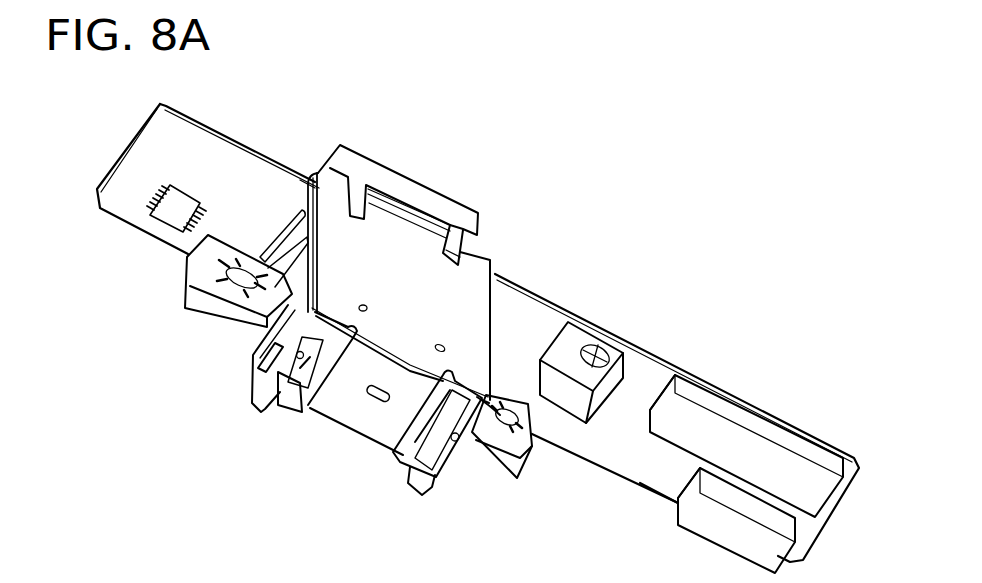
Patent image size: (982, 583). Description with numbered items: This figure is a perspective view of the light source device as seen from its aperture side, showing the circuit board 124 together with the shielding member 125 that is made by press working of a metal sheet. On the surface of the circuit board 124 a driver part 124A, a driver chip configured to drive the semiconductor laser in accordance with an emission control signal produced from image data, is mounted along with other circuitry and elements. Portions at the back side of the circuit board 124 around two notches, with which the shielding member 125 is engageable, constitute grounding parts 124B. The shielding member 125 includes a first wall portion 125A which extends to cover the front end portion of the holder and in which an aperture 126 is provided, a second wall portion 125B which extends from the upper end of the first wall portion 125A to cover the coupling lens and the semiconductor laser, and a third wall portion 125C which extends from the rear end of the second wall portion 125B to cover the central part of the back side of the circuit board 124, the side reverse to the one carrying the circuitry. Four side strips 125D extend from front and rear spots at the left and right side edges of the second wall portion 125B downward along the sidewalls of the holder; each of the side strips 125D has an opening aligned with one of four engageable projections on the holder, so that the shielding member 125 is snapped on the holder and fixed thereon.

The circuit board 124 is at (658, 357).
The driver part 124A is at (167, 214).
The grounding parts 124B is at (314, 181).
The shielding member 125 is at (349, 313).
The first wall portion 125A is at (393, 455).
The second wall portion 125B is at (403, 265).
The third wall portion 125C is at (320, 177).
The side strips 125D is at (297, 246).
The aperture 126 is at (380, 400).